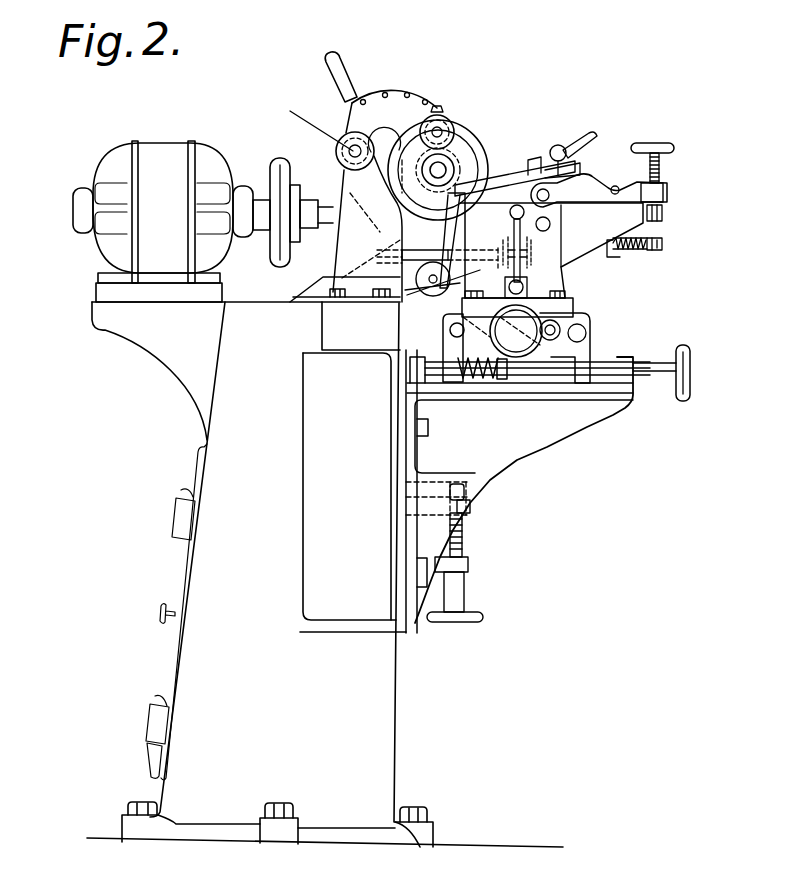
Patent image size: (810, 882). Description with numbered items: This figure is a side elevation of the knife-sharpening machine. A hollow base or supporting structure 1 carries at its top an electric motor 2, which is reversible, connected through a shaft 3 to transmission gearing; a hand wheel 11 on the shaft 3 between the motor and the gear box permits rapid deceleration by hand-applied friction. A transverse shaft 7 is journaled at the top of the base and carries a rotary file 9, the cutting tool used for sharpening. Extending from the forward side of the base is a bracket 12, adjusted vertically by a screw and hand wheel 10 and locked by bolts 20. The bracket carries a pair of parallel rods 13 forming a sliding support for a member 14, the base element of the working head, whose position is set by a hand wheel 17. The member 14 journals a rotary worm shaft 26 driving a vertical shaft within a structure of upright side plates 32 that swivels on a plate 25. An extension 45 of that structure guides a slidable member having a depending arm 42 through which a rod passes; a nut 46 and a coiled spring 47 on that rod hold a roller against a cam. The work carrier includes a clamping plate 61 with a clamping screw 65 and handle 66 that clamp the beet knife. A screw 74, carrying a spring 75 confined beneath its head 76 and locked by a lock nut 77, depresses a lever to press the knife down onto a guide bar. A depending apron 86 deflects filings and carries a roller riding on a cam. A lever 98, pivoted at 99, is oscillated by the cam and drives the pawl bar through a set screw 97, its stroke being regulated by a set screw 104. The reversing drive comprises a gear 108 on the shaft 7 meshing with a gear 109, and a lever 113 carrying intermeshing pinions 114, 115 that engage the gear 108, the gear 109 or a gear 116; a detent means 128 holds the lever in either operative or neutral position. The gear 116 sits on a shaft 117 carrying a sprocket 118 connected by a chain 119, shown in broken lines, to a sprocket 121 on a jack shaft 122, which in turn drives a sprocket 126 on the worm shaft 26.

The base or supporting structure 1 is at (385, 664).
The electric motor 2 is at (163, 150).
The shaft 3 is at (330, 228).
The shaft 7 is at (447, 166).
The rotary file 9 is at (460, 150).
The screw and hand wheel 10 is at (463, 537).
The hand wheel 11 is at (283, 163).
The bracket 12 is at (512, 456).
The rods 13 is at (545, 373).
The member 14 is at (590, 350).
The hand wheel 17 is at (690, 353).
The bolts 20 is at (430, 430).
The plate 25 is at (578, 313).
The rotary shaft 26 is at (516, 331).
The upright side plates 32 is at (570, 290).
The depending arm 42 is at (614, 257).
The extension 45 is at (554, 250).
The nut 46 is at (662, 242).
The coiled spring 47 is at (643, 250).
The clamping plate 61 is at (492, 181).
The clamping screw 65 is at (558, 146).
The handle 66 is at (591, 146).
The screw 74 is at (666, 192).
The spring 75 is at (662, 168).
The head 76 is at (675, 150).
The lock nut 77 is at (662, 210).
The depending apron 86 is at (445, 241).
The set screw 97 is at (510, 212).
The lever 98 is at (514, 227).
The pivot 99 is at (532, 254).
The set screw 104 is at (525, 288).
The gear 108 is at (457, 168).
The gear 109 is at (452, 128).
The lever 113 is at (350, 76).
The pinion 114 is at (396, 184).
The pinion 115 is at (395, 128).
The gear 116 is at (356, 136).
The shaft 117 is at (310, 125).
The sprocket 118 is at (347, 151).
The chain 119 is at (381, 230).
The sprocket 121 is at (430, 296).
The jack shaft 122 is at (428, 262).
The sprocket 126 is at (583, 321).
The detent means 128 is at (360, 103).